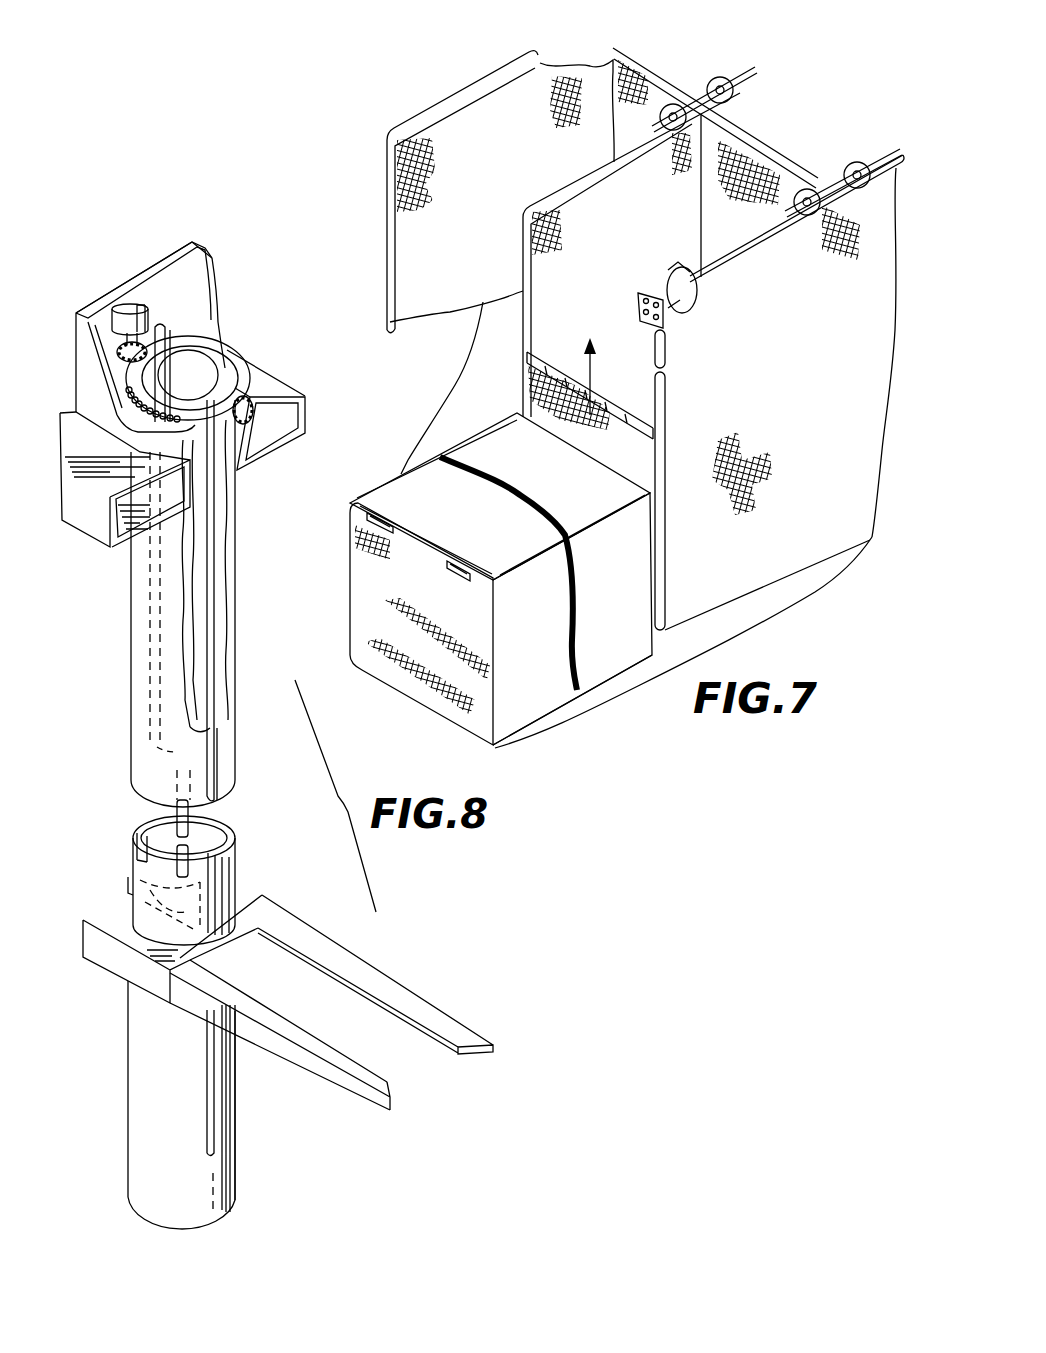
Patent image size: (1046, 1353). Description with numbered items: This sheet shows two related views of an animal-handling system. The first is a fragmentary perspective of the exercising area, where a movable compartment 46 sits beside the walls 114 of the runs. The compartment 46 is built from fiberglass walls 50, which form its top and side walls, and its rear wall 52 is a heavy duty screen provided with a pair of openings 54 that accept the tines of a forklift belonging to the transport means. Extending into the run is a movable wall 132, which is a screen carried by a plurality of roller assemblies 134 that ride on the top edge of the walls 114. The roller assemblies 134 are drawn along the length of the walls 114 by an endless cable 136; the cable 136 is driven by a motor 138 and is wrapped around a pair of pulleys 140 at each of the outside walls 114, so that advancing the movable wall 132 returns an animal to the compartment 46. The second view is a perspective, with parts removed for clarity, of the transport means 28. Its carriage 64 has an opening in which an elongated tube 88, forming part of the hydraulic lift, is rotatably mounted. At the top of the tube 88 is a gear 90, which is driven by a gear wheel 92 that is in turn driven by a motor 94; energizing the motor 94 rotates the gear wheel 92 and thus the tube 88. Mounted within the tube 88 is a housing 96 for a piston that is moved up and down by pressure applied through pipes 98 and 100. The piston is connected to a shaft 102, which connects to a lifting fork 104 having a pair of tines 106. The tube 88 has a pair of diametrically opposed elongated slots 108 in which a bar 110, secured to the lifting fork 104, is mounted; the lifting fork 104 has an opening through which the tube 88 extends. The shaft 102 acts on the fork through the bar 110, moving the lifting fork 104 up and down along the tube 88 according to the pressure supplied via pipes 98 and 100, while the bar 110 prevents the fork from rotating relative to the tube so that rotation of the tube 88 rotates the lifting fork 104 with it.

In FIG. 8, the transport means 28 is at (247, 320).
In FIG. 7, the movable compartment 46 is at (515, 690).
In FIG. 7, the fiberglass walls 50 is at (482, 533).
In FIG. 7, the rear wall 52 is at (420, 698).
In FIG. 7, the openings 54 is at (447, 565).
In FIG. 8, the carriage 64 is at (282, 385).
In FIG. 8, the elongated tube 88 is at (240, 555).
In FIG. 8, the gear 90 is at (245, 378).
In FIG. 8, the gear wheel 92 is at (118, 318).
In FIG. 8, the motor 94 is at (143, 304).
In FIG. 8, the housing 96 is at (205, 628).
In FIG. 8, the pipe 98 is at (196, 285).
In FIG. 8, the pipe 100 is at (166, 328).
In FIG. 8, the shaft 102 is at (190, 813).
In FIG. 8, the lifting fork 104 is at (267, 907).
In FIG. 8, the tines 106 is at (360, 978).
In FIG. 8, the elongated slots 108 is at (215, 741).
In FIG. 8, the bar 110 is at (237, 907).
In FIG. 7, the walls 114 is at (522, 163).
In FIG. 7, the movable wall 132 is at (778, 135).
In FIG. 7, the roller assemblies 134 is at (665, 62).
In FIG. 7, the endless cable 136 is at (758, 252).
In FIG. 7, the motor 138 is at (673, 307).
In FIG. 7, the pulleys 140 is at (668, 270).